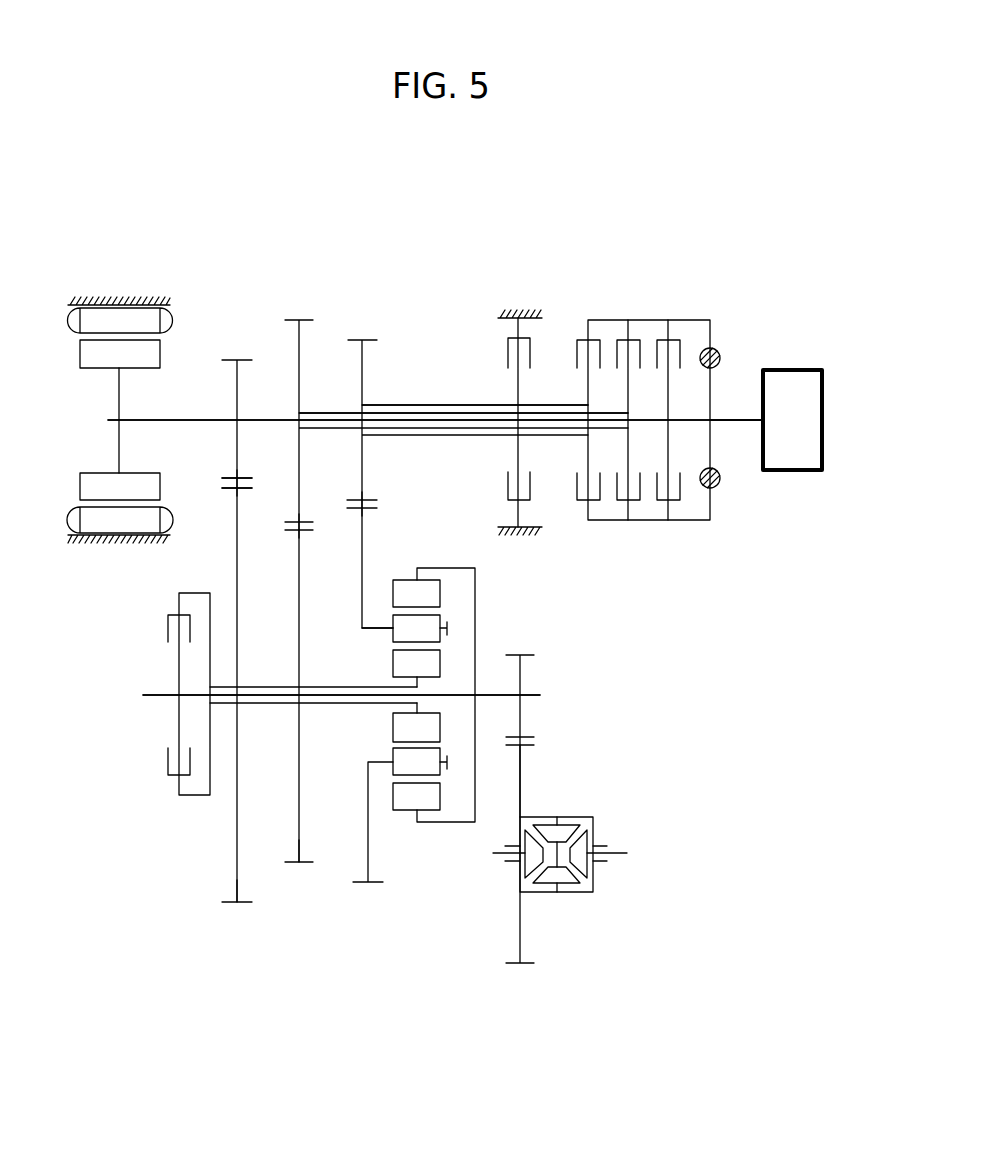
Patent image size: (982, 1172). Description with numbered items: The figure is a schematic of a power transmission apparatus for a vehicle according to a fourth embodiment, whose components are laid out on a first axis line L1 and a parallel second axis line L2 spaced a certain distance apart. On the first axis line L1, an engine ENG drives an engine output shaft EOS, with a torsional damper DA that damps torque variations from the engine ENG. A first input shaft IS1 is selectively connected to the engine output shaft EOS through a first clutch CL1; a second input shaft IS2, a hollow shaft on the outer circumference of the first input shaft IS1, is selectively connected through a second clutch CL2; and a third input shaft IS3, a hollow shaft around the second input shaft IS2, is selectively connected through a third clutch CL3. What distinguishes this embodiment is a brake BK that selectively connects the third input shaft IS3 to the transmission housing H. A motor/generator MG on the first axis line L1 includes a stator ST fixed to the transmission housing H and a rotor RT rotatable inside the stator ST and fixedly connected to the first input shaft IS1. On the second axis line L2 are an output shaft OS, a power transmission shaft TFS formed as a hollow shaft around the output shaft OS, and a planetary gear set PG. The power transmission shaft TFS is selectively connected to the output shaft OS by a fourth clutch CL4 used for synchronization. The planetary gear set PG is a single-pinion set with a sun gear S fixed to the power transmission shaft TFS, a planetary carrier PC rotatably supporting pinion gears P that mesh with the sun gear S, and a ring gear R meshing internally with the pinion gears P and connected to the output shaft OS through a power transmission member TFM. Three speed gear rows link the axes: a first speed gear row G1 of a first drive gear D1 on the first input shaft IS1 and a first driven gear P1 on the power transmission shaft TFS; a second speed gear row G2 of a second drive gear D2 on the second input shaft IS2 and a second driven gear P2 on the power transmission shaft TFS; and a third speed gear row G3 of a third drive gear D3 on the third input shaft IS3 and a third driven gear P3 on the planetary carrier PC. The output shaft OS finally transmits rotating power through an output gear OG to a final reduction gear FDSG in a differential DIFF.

The transmission housing H is at (118, 305).
The motor/generator MG is at (138, 419).
The stator ST is at (119, 319).
The rotor RT is at (120, 353).
The first axis line L1 is at (97, 420).
The first drive gear D1 is at (237, 392).
The second drive gear D2 is at (299, 342).
The third drive gear D3 is at (362, 368).
The first driven gear P1 is at (237, 537).
The second driven gear P2 is at (299, 580).
The third driven gear P3 is at (362, 550).
The first input shaft IS1 is at (478, 420).
The second input shaft IS2 is at (443, 413).
The third input shaft IS3 is at (407, 405).
The brake BK is at (540, 340).
The first clutch CL1 is at (680, 338).
The second clutch CL2 is at (640, 338).
The third clutch CL3 is at (598, 338).
The fourth clutch CL4 is at (168, 613).
The torsional damper DA is at (718, 351).
The engine output shaft EOS is at (735, 421).
The engine ENG is at (792, 420).
The second axis line L2 is at (135, 695).
The power transmission shaft TFS is at (323, 687).
The output shaft OS is at (338, 697).
The planetary gear set PG is at (420, 661).
The ring gear R is at (416, 593).
The pinion gears P is at (420, 628).
The sun gear S is at (416, 663).
The planetary carrier PC is at (377, 630).
The power transmission member TFM is at (476, 593).
The first speed gear row G1 is at (237, 905).
The second speed gear row G2 is at (299, 866).
The third speed gear row G3 is at (368, 887).
The output gear OG is at (520, 713).
The final reduction gear FDSG is at (520, 778).
The differential DIFF is at (593, 830).